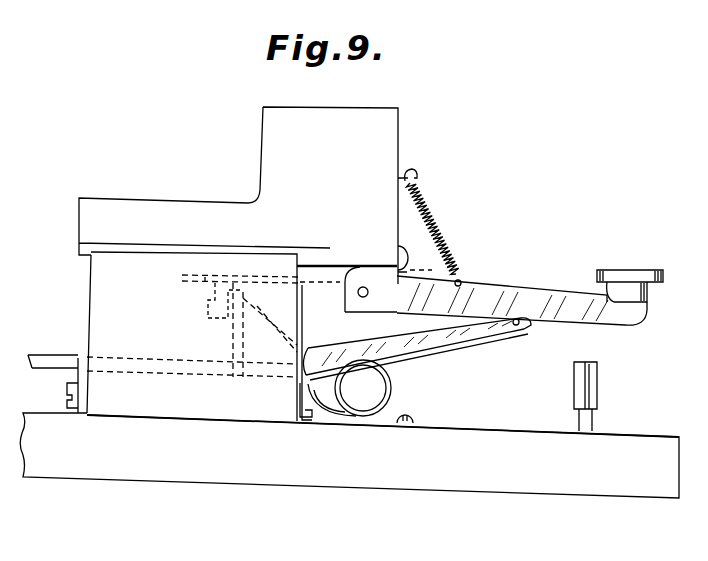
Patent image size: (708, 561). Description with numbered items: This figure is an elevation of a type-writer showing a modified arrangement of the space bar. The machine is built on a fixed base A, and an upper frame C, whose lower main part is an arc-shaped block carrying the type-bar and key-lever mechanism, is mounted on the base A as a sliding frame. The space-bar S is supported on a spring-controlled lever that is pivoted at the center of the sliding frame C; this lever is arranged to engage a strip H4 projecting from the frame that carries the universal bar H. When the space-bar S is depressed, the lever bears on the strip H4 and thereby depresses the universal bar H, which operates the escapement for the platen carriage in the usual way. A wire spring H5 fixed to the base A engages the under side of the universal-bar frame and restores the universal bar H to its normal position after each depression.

The upper frame C is at (243, 264).
The fixed base A is at (190, 437).
The universal bar H is at (227, 285).
The strip H4 is at (477, 323).
The wire spring H5 is at (377, 428).
The space-bar S is at (637, 272).